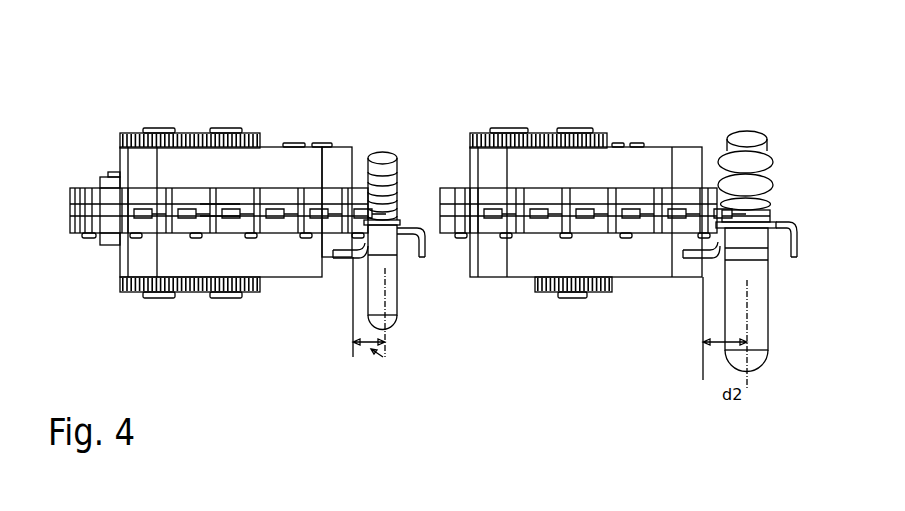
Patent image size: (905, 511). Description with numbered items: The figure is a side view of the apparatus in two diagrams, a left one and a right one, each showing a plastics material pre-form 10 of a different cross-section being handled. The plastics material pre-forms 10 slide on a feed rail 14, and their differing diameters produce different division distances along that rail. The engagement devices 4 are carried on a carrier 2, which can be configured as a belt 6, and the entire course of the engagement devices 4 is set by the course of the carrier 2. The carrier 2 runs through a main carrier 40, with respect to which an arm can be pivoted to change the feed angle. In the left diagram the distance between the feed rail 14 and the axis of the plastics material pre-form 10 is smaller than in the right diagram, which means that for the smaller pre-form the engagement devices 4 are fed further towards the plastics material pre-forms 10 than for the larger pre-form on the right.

The carrier 2 is at (115, 197).
The engagement devices 4 is at (128, 216).
The belt 6 is at (223, 232).
The plastics material pre-forms 10 is at (392, 278).
The feed rail 14 is at (410, 198).
The main carrier 40 is at (257, 172).